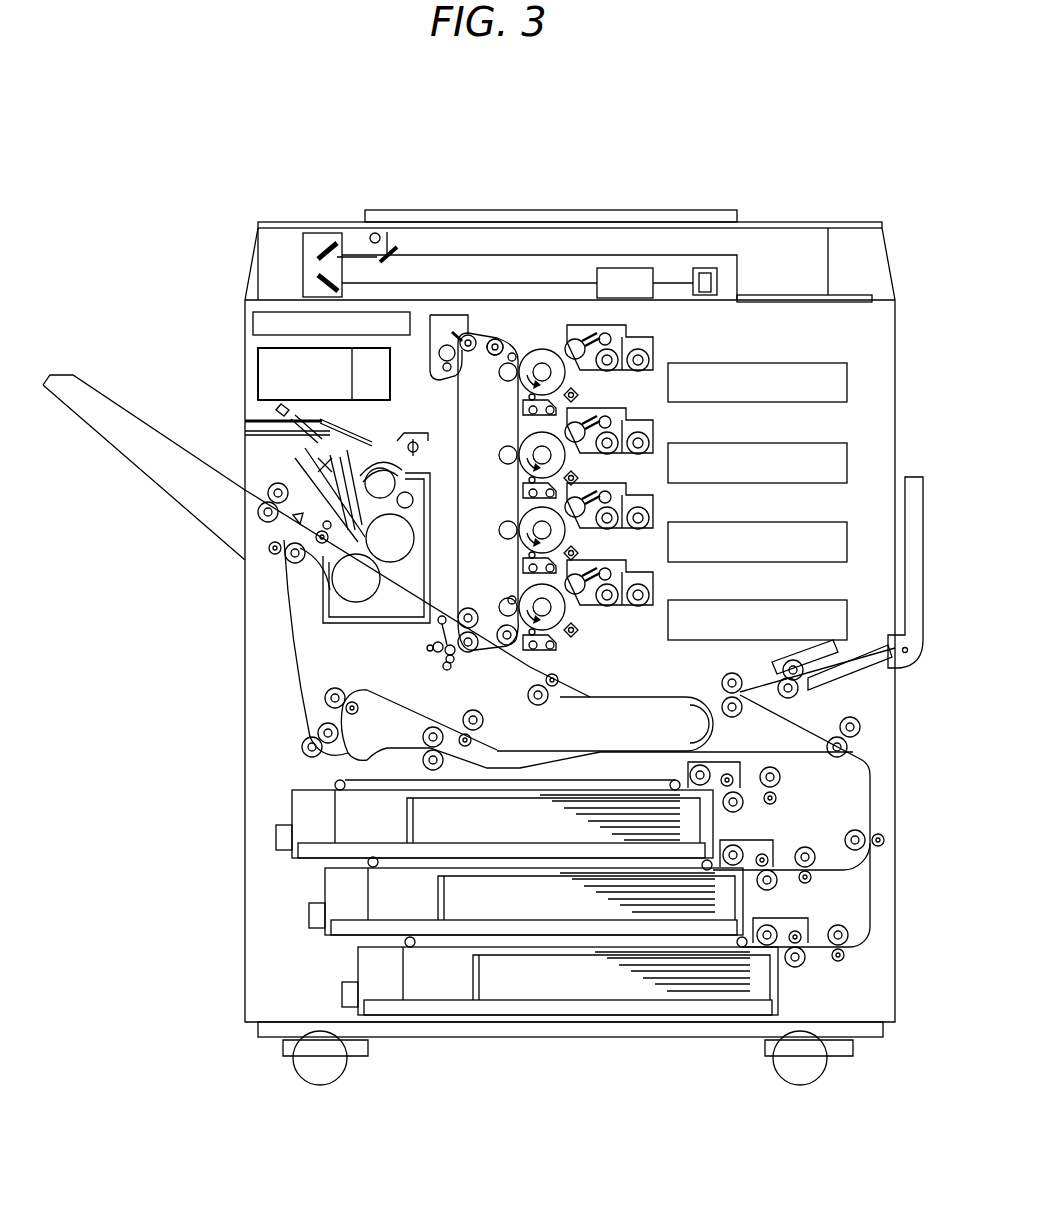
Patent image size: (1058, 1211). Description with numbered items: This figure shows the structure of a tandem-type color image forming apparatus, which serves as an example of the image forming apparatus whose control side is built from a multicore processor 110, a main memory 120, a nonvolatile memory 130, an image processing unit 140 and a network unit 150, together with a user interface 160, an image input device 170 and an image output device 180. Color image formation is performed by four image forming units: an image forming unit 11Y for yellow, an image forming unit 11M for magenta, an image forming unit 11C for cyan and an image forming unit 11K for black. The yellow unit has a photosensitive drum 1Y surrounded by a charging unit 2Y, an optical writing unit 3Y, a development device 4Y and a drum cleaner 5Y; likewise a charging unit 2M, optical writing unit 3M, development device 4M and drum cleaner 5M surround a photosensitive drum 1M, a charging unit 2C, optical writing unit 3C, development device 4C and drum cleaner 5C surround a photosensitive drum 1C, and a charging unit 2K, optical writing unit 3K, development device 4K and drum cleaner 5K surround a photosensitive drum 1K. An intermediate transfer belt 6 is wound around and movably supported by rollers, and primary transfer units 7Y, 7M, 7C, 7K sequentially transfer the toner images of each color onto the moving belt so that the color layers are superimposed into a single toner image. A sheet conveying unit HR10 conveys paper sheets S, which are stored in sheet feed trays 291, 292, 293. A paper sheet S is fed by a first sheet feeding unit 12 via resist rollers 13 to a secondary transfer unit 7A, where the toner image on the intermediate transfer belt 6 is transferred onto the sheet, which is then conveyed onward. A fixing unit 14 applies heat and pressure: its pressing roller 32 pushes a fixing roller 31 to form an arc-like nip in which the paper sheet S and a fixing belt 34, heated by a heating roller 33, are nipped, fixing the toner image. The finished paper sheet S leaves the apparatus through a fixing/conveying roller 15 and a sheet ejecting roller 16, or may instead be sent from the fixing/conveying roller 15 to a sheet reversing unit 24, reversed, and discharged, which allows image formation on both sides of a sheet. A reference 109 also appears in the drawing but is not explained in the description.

The multicore processor 110 is at (277, 345).
The main memory 120 is at (324, 374).
The nonvolatile memory 130 is at (324, 374).
The image processing unit 140 is at (324, 374).
The network unit 150 is at (324, 374).
The image input device 170 is at (775, 240).
The user interface 160 is at (860, 300).
The image output device 180 is at (883, 414).
The photosensitive drum 1Y is at (545, 352).
The photosensitive drum 1M is at (522, 447).
The photosensitive drum 1C is at (522, 528).
The photosensitive drum 1K is at (520, 640).
The charging unit 2Y is at (558, 404).
The charging unit 2M is at (565, 470).
The charging unit 2C is at (580, 553).
The charging unit 2K is at (576, 636).
The optical writing unit 3Y is at (814, 376).
The optical writing unit 3M is at (814, 456).
The optical writing unit 3C is at (814, 536).
The optical writing unit 3K is at (814, 614).
The development device 4Y is at (640, 340).
The development device 4M is at (655, 425).
The development device 4C is at (628, 494).
The development device 4K is at (640, 600).
The drum cleaner 5Y is at (495, 340).
The drum cleaner 5M is at (640, 522).
The drum cleaner 5C is at (505, 598).
The drum cleaner 5K is at (558, 662).
The intermediate transfer belt 6 is at (460, 400).
The primary transfer unit 7Y is at (508, 362).
The primary transfer unit 7M is at (505, 462).
The primary transfer unit 7C is at (505, 540).
The primary transfer unit 7K is at (470, 650).
The secondary transfer unit 7A is at (450, 663).
The image forming unit 11Y is at (662, 352).
The image forming unit 11M is at (662, 432).
The image forming unit 11C is at (662, 512).
The image forming unit 11K is at (662, 592).
The first sheet feeding unit 12 is at (722, 760).
The resist rollers 13 is at (552, 700).
The fixing unit 14 is at (355, 665).
The fixing/conveying roller 15 is at (307, 597).
The sheet ejecting roller 16 is at (250, 475).
The sheet reversing unit 24 is at (297, 653).
The fixing roller 31 is at (393, 557).
The pressing roller 32 is at (357, 593).
The heating roller 33 is at (337, 440).
The fixing belt 34 is at (383, 448).
The secondary transfer unit 109 is at (697, 733).
The sheet feed tray 291 is at (307, 802).
The sheet feed tray 292 is at (330, 888).
The sheet feed tray 293 is at (372, 966).
The paper sheet S is at (580, 806).
The sheet conveying unit HR10 is at (787, 710).